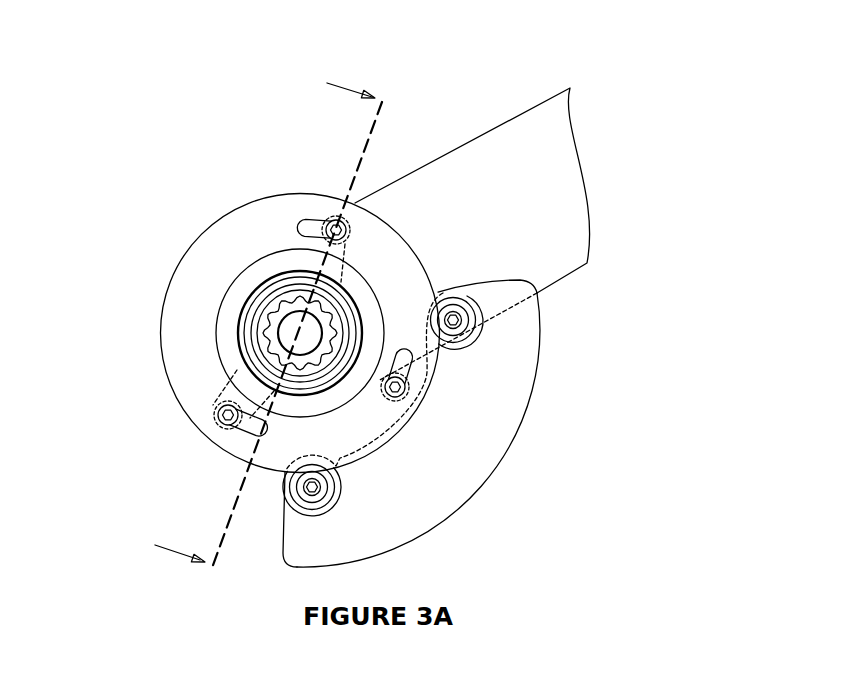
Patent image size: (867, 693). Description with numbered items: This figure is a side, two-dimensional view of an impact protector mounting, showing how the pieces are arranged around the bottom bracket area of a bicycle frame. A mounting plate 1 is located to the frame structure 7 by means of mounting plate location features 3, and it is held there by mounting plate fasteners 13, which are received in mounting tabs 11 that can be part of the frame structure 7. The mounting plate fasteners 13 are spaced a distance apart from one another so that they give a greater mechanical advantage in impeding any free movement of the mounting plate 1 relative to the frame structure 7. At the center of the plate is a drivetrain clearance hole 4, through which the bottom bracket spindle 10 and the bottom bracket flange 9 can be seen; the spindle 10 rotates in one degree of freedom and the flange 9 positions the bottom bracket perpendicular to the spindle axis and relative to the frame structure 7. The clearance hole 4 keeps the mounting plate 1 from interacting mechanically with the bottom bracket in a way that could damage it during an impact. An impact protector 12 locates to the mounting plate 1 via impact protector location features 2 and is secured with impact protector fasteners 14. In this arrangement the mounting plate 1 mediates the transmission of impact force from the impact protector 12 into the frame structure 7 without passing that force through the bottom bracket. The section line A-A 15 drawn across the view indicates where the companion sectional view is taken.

The mounting plate 1 is at (198, 252).
The impact protector location feature 2 is at (537, 293).
The mounting plate location feature 3 is at (300, 213).
The drivetrain clearance hole 4 is at (215, 308).
The frame structure 7 is at (525, 152).
The bottom bracket flange 9 is at (238, 333).
The bottom bracket spindle 10 is at (272, 342).
The mounting tab 11 is at (308, 252).
The impact protector 12 is at (468, 468).
The mounting plate fastener 13 is at (322, 228).
The impact protector fastener 14 is at (470, 330).
The section line A-A 15 is at (383, 121).